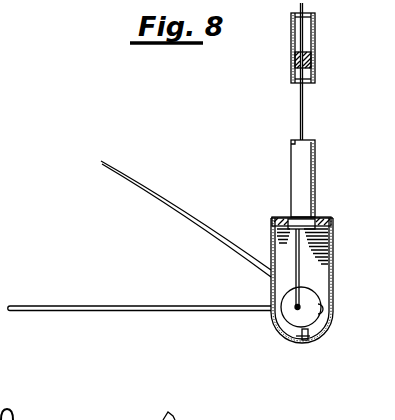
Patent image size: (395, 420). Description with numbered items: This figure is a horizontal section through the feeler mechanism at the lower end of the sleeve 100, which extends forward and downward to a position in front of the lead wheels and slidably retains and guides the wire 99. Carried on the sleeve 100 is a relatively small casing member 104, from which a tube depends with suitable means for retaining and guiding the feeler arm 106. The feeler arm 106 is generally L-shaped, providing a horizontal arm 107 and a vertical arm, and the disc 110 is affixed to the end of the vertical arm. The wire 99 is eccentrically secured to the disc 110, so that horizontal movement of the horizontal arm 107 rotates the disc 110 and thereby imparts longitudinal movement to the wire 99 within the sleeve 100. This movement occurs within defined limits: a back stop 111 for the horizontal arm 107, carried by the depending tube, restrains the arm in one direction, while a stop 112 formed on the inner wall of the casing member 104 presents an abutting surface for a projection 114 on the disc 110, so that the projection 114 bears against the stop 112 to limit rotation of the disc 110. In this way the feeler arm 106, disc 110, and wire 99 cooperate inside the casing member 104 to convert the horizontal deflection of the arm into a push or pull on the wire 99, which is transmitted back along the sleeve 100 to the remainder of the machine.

The wire 99 is at (297, 253).
The sleeve 100 is at (264, 71).
The casing member 104 is at (330, 217).
The feeler arm 106 is at (182, 314).
The horizontal arm 107 is at (80, 312).
The disc 110 is at (313, 298).
The back stop 111 is at (148, 194).
The stop 112 is at (322, 333).
The projection 114 is at (302, 334).